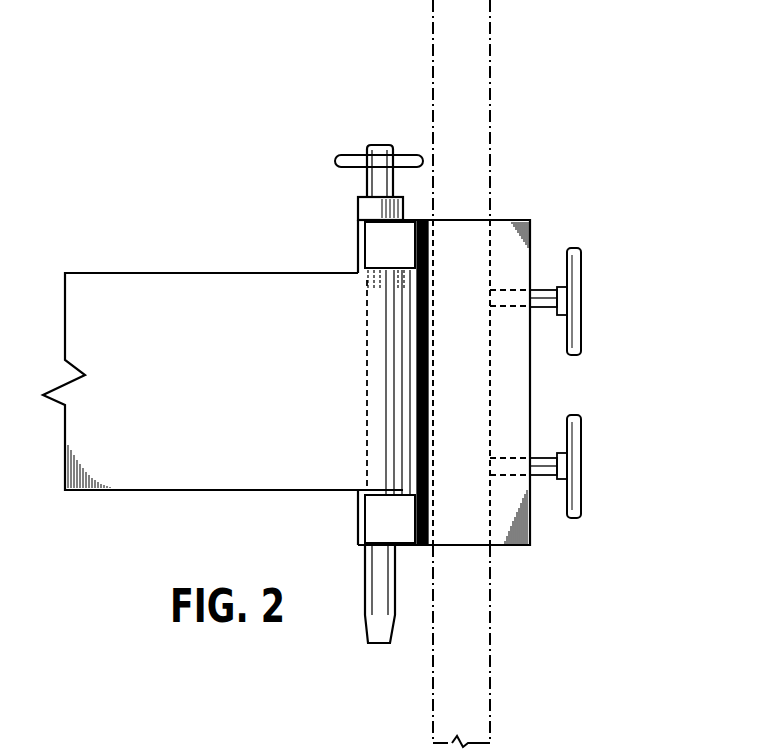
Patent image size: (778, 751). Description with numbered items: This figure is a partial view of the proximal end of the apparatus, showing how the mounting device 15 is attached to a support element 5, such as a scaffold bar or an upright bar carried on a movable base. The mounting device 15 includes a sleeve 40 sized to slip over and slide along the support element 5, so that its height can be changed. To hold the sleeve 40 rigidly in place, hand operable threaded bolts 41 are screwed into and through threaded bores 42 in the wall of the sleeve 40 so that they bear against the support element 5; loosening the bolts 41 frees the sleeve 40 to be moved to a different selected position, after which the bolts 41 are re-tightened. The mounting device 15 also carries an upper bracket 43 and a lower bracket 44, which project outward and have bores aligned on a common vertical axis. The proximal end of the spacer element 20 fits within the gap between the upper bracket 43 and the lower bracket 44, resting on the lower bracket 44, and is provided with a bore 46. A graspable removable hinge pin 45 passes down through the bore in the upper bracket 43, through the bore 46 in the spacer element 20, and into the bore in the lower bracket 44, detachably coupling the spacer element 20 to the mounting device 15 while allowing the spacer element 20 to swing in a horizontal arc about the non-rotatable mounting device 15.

The support element 5 is at (490, 44).
The mounting device 15 is at (497, 545).
The spacer element 20 is at (115, 298).
The sleeve 40 is at (458, 233).
The threaded bolts 41 is at (542, 290).
The threaded bores 42 is at (505, 290).
The upper bracket 43 is at (358, 243).
The lower bracket 44 is at (358, 522).
The hinge pin 45 is at (357, 211).
The bore 46 is at (367, 367).